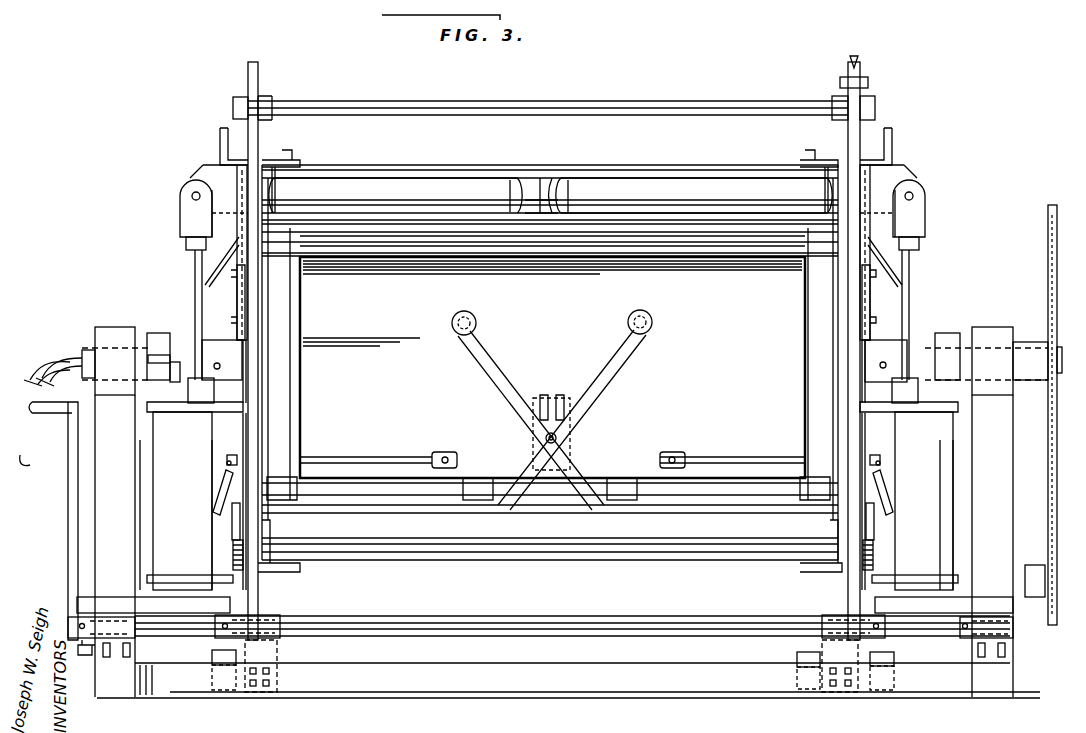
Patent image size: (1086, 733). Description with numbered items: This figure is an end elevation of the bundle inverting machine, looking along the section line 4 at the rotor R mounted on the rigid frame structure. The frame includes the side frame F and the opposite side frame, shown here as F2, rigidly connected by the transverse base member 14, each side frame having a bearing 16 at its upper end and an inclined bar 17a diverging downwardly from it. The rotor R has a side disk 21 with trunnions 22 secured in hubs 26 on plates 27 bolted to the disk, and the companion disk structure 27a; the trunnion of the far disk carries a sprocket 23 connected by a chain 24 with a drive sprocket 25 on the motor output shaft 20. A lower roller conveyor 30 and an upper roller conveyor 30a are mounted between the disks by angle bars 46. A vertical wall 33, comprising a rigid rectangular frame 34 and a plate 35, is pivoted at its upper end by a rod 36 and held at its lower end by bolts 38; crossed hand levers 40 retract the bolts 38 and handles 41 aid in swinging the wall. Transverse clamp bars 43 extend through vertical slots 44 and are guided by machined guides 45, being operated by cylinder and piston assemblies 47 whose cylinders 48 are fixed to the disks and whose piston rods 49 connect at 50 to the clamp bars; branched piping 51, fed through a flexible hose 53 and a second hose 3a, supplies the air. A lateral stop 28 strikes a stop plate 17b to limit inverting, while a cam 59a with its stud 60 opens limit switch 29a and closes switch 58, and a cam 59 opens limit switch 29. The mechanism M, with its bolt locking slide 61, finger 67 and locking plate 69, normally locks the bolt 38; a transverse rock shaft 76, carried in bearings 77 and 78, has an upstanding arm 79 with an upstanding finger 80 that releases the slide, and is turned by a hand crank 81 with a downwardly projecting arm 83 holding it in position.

The section line 4- 4 is at (722, 728).
The transverse base member 14 is at (592, 680).
The transverse rock shaft 76 is at (582, 630).
The rotor R is at (236, 91).
The cam 59a is at (862, 55).
The stud 60 is at (840, 82).
The lateral stop 28 is at (220, 148).
The upper roller conveyor 30a is at (503, 153).
The vertical wall 33 is at (435, 263).
The plate 35 is at (680, 240).
The transverse clamp bar 43 is at (205, 175).
The connection 50 is at (192, 196).
The piston rod 49 is at (196, 300).
The machined guide 45 is at (232, 262).
The vertical slot 44 is at (860, 268).
The side disk 21 is at (262, 355).
The plate 27 is at (268, 372).
The frame member 27a is at (855, 348).
The rigid rectangular frame 34 is at (512, 250).
The rod 36 is at (605, 252).
The crossed hand levers 40 is at (587, 388).
The handle 41 is at (418, 436).
The bolt 38 is at (435, 490).
The lower roller conveyor 30 is at (559, 561).
The angle bar 46 is at (300, 160).
The bearing 16 is at (110, 327).
The trunnion 22 is at (116, 345).
The hub 26 is at (155, 340).
The flexible hose 53 is at (68, 358).
The hose 3a is at (35, 372).
The branched piping 51 is at (164, 372).
The side frame F is at (84, 440).
The hand crank 81 is at (70, 448).
The inclined bar 17a is at (125, 452).
The cylinder and piston assembly 47 is at (144, 497).
The frame F2 is at (1009, 457).
The cylinder 48 is at (150, 522).
The bolt locking slide 61 is at (228, 472).
The locking plate 69 is at (220, 490).
The mechanism M is at (200, 502).
The finger 67 is at (232, 517).
The upstanding finger 80 is at (232, 543).
The stop plate 17b is at (145, 600).
The upstanding arm 79 is at (245, 583).
The bearing 77 is at (112, 625).
The bearing 78 is at (280, 618).
The downwardly projecting arm 83 is at (92, 656).
The cam 59 is at (283, 654).
The limit switch 29 is at (202, 660).
The limit switch 29a is at (898, 655).
The switch 58 is at (790, 660).
The sprocket 23 is at (1050, 210).
The chain 24 is at (1048, 252).
The drive sprocket 25 is at (1052, 630).
The output shaft 20 is at (1024, 566).